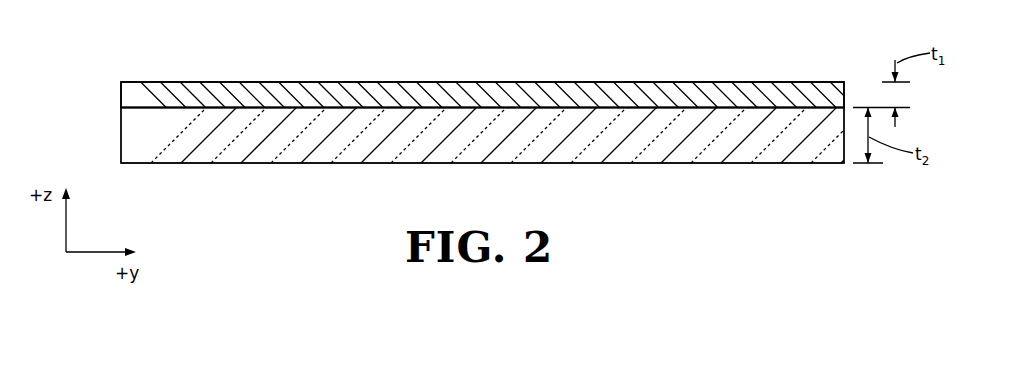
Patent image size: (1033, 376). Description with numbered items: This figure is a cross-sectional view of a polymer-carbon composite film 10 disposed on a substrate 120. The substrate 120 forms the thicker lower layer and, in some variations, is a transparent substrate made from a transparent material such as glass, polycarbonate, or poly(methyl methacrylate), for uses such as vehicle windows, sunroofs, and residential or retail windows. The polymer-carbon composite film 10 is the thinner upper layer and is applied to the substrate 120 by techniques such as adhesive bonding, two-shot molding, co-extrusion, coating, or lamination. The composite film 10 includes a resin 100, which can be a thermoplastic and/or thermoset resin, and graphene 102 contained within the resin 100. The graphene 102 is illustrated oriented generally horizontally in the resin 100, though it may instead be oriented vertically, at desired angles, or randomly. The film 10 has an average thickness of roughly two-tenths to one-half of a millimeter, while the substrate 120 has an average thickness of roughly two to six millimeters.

The polymer-carbon composite film 10 is at (482, 124).
The resin 100 is at (613, 100).
The graphene 102 is at (722, 102).
The substrate 120 is at (628, 152).